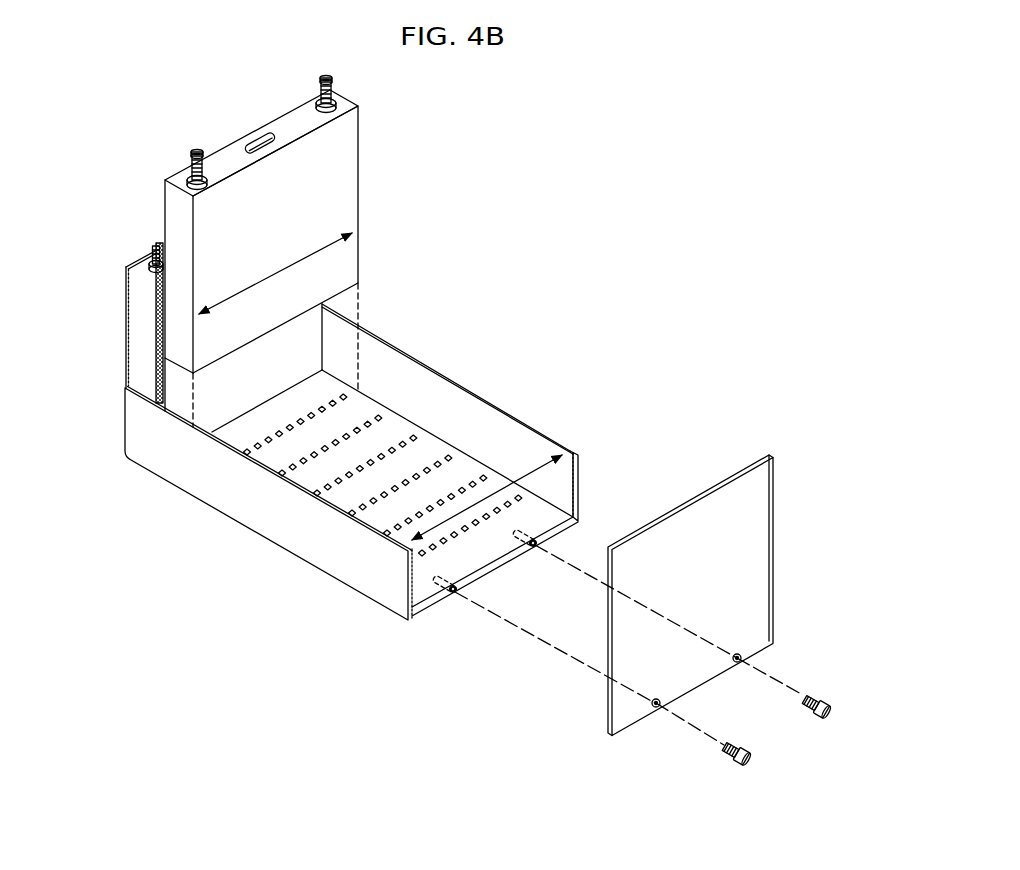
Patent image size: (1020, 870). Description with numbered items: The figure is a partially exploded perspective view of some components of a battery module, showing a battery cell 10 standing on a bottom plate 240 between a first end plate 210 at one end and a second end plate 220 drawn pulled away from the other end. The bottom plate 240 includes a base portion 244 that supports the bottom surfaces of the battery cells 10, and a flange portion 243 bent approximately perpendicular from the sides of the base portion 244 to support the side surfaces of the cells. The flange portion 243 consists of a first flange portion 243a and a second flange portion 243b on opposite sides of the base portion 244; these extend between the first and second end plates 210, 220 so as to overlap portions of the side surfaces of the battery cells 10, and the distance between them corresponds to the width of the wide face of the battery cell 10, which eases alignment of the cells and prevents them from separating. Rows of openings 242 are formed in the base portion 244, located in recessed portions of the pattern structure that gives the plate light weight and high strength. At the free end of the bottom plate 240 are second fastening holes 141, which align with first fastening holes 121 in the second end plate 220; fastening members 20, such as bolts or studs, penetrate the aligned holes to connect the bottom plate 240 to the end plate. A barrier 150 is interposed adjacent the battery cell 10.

The battery cell 10 is at (358, 176).
The fastening member 20 is at (749, 761).
The first fastening hole 121 is at (661, 702).
The second fastening hole 141 is at (533, 546).
The barrier 150 is at (149, 380).
The first end plate 210 is at (120, 349).
The second end plate 220 is at (680, 599).
The bottom plate 240 is at (325, 492).
The opening 242 is at (381, 415).
The flange portion 243 is at (325, 462).
The first flange portion 243a is at (260, 509).
The second flange portion 243b is at (382, 382).
The base portion 244 is at (280, 453).